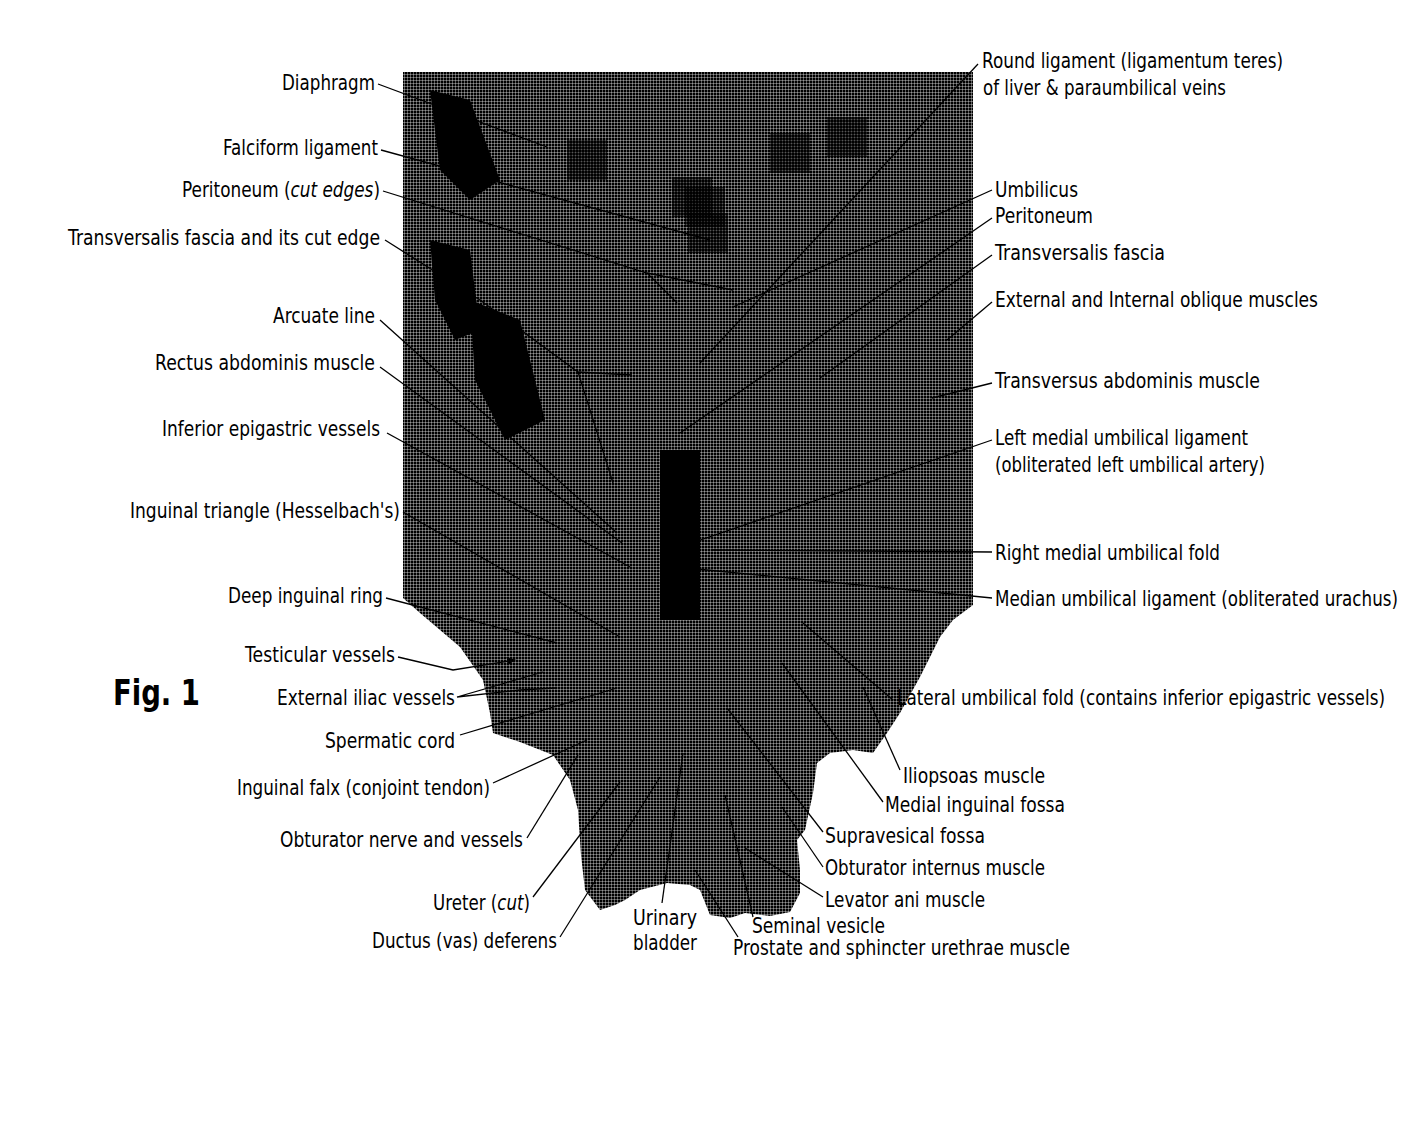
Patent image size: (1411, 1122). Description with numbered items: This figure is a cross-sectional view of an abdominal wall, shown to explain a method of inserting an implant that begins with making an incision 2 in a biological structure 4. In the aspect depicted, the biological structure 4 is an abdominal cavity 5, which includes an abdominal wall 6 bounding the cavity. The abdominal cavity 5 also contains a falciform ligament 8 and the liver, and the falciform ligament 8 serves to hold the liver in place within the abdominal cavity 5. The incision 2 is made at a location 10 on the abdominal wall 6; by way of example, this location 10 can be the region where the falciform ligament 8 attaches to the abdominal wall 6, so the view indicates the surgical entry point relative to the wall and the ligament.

The incision 2 is at (692, 197).
The biological structure 4 is at (847, 137).
The abdominal cavity 5 is at (587, 160).
The abdominal wall 6 is at (790, 153).
The falciform ligament 8 is at (708, 233).
The location 10 is at (705, 207).